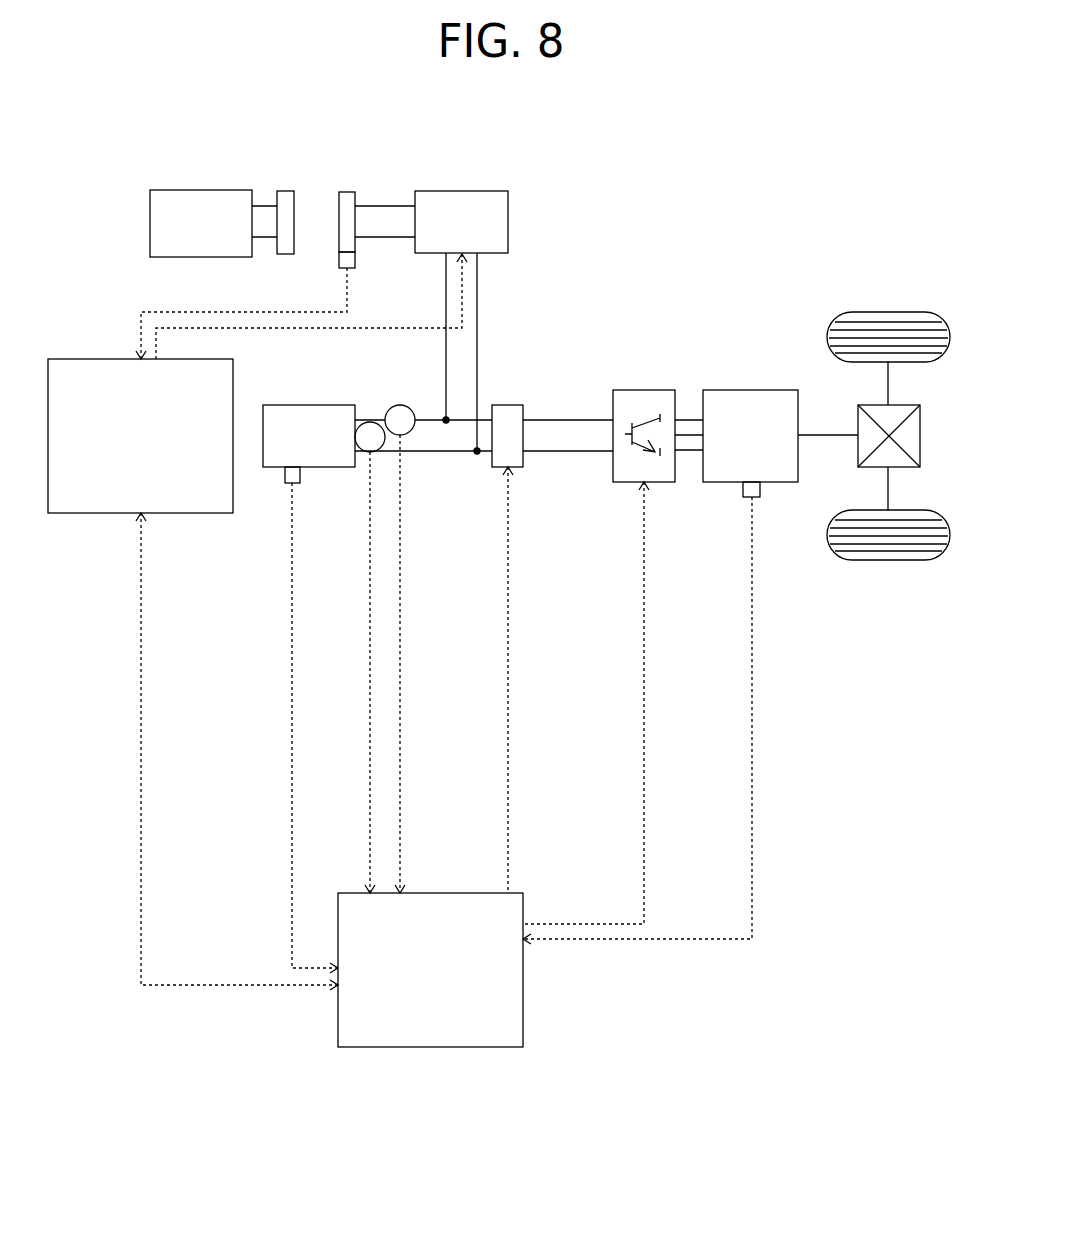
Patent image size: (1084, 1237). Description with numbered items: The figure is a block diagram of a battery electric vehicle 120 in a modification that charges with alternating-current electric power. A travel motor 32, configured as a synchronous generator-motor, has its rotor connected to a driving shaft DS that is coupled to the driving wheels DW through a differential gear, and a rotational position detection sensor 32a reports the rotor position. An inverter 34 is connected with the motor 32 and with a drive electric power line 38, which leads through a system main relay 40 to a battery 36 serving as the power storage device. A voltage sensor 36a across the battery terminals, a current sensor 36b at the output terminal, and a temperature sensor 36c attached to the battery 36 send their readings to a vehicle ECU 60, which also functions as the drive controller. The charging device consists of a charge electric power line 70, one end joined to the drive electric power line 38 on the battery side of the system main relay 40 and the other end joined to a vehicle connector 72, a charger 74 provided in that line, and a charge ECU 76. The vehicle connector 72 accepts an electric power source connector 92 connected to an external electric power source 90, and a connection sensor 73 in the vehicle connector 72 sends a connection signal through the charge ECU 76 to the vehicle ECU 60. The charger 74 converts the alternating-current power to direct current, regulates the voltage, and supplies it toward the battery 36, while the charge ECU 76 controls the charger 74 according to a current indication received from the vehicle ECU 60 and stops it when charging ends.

The external electric power source 90 is at (199, 188).
The electric power source connector 92 is at (286, 189).
The vehicle connector 72 is at (347, 190).
The connection sensor 73 is at (338, 258).
The charge electric power line 70 is at (377, 237).
The charger 74 is at (460, 189).
The charge ECU 76 is at (110, 357).
The battery 36 is at (307, 403).
The voltage sensor 36a is at (370, 421).
The current sensor 36b is at (400, 405).
The temperature sensor 36c is at (301, 473).
The system main relay 40 is at (508, 403).
The drive electric power line 38 is at (570, 450).
The inverter 34 is at (645, 388).
The travel motor 32 is at (752, 388).
The rotational position detection sensor 32a is at (740, 490).
The vehicle ECU 60 is at (453, 891).
The battery electric vehicle 120 is at (581, 306).
The driving shaft DS is at (828, 433).
The driving wheels DW is at (888, 311).